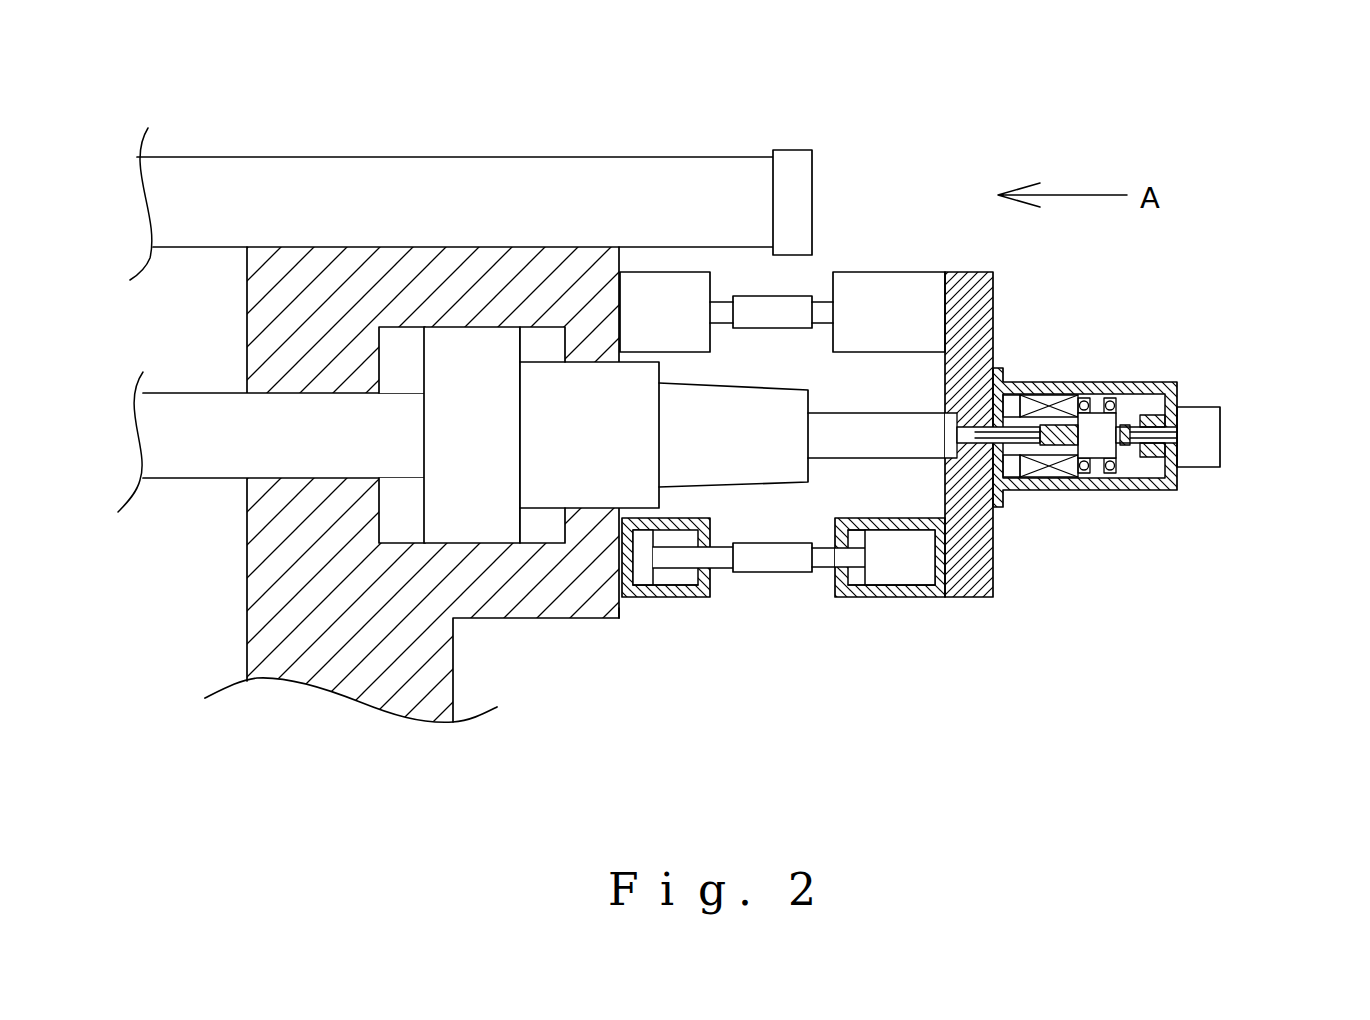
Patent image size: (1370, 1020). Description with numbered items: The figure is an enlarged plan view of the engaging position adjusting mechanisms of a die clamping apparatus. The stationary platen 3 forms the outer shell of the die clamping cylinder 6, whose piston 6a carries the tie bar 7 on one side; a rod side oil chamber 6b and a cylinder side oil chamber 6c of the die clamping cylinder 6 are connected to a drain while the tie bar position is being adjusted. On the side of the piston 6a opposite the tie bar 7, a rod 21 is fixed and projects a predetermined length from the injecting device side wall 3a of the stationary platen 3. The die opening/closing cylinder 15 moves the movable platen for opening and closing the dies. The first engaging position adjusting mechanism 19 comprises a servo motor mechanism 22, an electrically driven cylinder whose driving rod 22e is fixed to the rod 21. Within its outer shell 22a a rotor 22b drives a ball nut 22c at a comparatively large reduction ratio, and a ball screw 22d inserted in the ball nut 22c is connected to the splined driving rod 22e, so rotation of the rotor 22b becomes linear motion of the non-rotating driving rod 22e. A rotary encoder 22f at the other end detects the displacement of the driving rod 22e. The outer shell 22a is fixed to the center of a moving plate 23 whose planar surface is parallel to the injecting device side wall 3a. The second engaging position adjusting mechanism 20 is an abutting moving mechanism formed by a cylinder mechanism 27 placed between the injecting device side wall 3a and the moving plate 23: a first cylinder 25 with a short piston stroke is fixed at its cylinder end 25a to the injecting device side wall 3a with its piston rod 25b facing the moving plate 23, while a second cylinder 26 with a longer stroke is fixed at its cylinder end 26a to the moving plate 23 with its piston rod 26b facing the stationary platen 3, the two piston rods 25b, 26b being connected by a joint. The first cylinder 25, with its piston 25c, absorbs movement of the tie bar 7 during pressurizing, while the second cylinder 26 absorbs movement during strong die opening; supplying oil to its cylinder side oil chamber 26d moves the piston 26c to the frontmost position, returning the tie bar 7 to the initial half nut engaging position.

The stationary platen 3 is at (277, 588).
The injecting device side wall 3a is at (622, 607).
The die clamping cylinder 6 is at (555, 275).
The piston 6a is at (477, 362).
The rod side oil chamber 6b is at (400, 343).
The cylinder side oil chamber 6c is at (540, 340).
The tie bar 7 is at (205, 458).
The die opening/closing cylinder 15 is at (464, 187).
The first engaging position adjusting mechanism 19 is at (1233, 323).
The second engaging position adjusting mechanism 20 is at (773, 674).
The rod 21 is at (863, 432).
The servo motor mechanism 22 is at (1117, 350).
The outer shell 22a is at (1003, 375).
The rotor 22b is at (1037, 467).
The ball nut 22c is at (1098, 450).
The ball screw 22d is at (1130, 458).
The driving rod 22e is at (977, 423).
The rotary encoder 22f is at (1222, 424).
The moving plate 23 is at (993, 545).
The first cylinder 25 is at (692, 622).
The cylinder end 25a is at (625, 557).
The piston rod 25b is at (725, 558).
The piston 25c is at (645, 578).
The second cylinder 26 is at (902, 627).
The cylinder end 26a is at (940, 556).
The piston rod 26b is at (822, 567).
The piston 26c is at (853, 570).
The cylinder side oil chamber 26d is at (913, 583).
The cylinder mechanism 27 is at (792, 617).